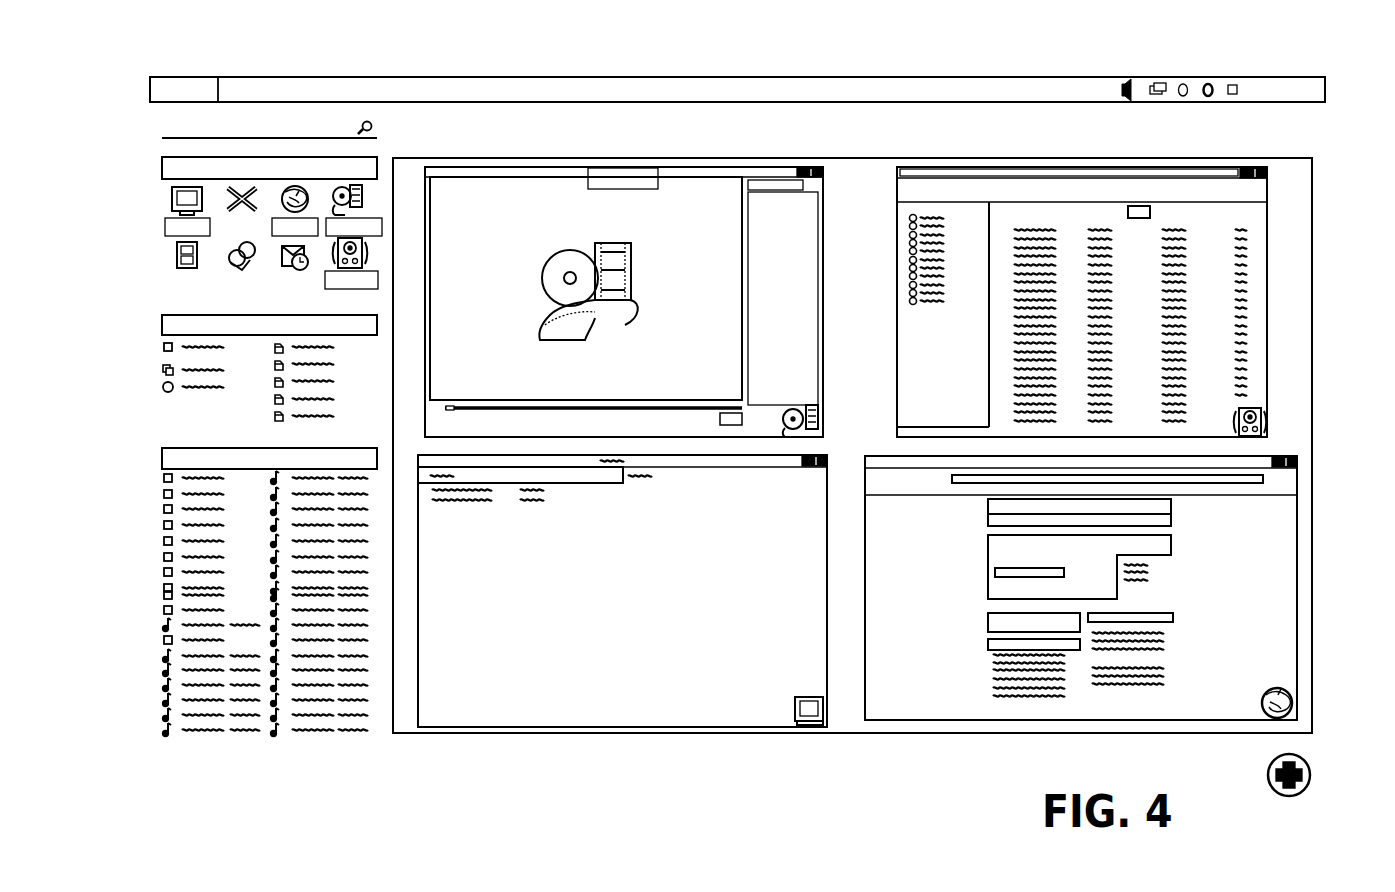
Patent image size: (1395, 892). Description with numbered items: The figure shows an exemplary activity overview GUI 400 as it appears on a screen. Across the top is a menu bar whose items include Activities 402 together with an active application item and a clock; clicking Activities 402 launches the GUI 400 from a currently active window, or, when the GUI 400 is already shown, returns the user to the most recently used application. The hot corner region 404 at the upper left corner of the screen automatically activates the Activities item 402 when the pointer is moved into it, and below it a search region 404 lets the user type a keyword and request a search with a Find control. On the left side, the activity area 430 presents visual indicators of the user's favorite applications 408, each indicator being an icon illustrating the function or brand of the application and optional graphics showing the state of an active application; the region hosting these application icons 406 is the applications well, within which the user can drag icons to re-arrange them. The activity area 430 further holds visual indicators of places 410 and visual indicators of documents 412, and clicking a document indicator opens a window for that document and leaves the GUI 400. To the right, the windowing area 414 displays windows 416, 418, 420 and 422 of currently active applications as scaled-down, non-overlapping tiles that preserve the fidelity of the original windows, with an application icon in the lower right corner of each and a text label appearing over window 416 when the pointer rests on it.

The activity overview GUI 400 is at (1257, 68).
The Activities item 402 is at (150, 89).
The hot corner region 404 is at (160, 110).
The application icons 406 is at (160, 130).
The favorite applications 408 is at (162, 170).
The visual indicators of places 410 is at (162, 327).
The visual indicators of documents 412 is at (162, 461).
The windowing area 414 is at (795, 758).
The window 416 is at (773, 217).
The window 418 is at (1224, 286).
The window 420 is at (511, 702).
The window 422 is at (988, 690).
The activity area 430 is at (240, 738).